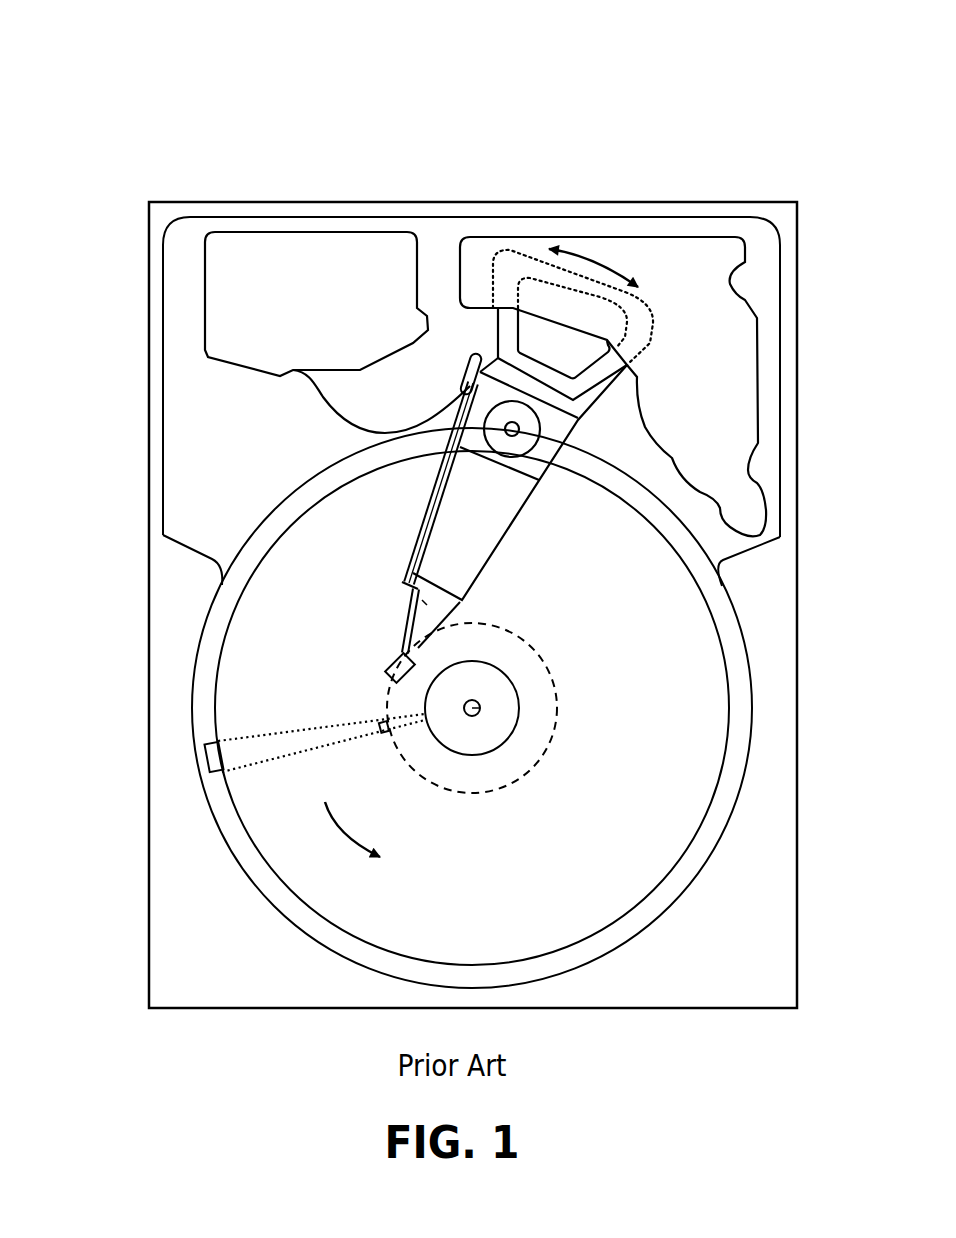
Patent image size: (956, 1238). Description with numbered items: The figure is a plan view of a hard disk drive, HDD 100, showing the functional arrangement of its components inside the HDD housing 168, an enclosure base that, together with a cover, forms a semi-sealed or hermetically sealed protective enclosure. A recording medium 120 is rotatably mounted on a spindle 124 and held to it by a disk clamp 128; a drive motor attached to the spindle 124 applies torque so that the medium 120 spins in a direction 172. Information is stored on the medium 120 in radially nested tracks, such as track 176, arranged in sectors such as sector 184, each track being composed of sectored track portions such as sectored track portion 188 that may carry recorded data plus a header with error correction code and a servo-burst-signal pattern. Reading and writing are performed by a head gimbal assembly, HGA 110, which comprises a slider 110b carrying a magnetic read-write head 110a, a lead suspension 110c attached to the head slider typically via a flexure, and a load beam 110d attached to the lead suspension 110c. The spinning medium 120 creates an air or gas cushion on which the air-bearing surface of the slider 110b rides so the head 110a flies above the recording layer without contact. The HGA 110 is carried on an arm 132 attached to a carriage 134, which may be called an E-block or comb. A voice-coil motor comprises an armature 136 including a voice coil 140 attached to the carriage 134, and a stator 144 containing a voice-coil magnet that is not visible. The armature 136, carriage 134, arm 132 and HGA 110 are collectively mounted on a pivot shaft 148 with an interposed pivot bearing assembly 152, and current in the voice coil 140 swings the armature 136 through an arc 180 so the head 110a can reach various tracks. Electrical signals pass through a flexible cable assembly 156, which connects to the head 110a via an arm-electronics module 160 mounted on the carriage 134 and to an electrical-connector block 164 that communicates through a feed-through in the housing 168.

The hard disk drive 100 is at (80, 85).
The head gimbal assembly 110 is at (75, 516).
The magnetic read-write head 110a is at (388, 678).
The slider 110b is at (400, 652).
The lead suspension 110c is at (405, 610).
The load beam 110d is at (400, 585).
The recording medium 120 is at (655, 660).
The spindle 124 is at (481, 708).
The disk clamp 128 is at (502, 745).
The arm 132 is at (463, 545).
The carriage 134 is at (532, 462).
The armature 136 is at (490, 340).
The voice coil 140 is at (508, 318).
The stator 144 is at (725, 327).
The pivot shaft 148 is at (514, 429).
The pivot bearing assembly 152 is at (533, 445).
The flexible cable assembly 156 is at (323, 402).
The arm-electronics module 160 is at (463, 395).
The electrical-connector block 164 is at (230, 303).
The HDD housing 168 is at (778, 213).
The direction 172 is at (362, 833).
The track 176 is at (548, 660).
The arc 180 is at (593, 257).
The sector 184 is at (206, 757).
The sectored track portion 188 is at (378, 728).